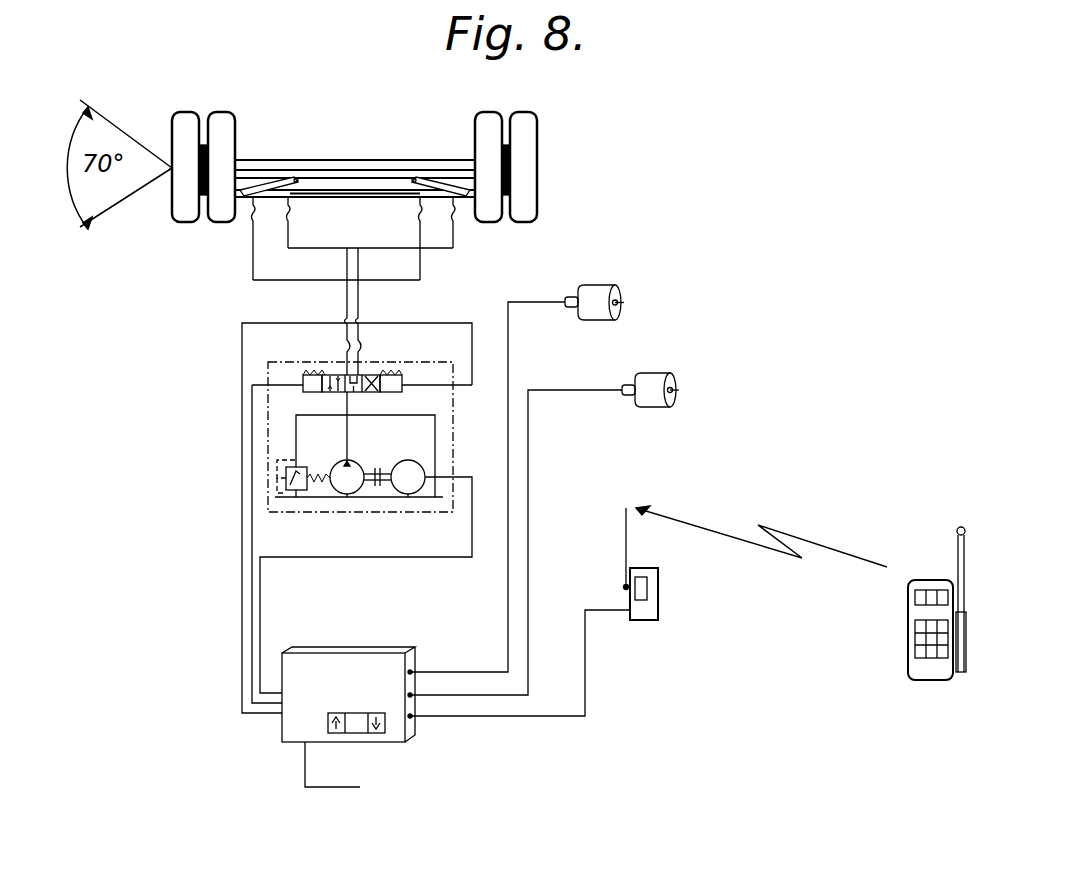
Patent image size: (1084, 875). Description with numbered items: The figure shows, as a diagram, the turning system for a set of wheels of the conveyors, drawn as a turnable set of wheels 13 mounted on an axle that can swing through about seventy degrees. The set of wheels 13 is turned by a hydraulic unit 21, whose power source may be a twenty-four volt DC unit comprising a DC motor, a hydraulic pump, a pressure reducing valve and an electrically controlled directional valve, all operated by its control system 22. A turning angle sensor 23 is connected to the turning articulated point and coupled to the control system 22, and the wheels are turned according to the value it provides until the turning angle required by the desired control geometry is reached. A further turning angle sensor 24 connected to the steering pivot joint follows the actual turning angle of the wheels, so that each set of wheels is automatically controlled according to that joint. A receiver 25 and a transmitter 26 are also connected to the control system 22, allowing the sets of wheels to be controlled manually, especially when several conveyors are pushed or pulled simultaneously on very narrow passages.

The turnable fixed set of wheels 13 is at (292, 162).
The hydraulic unit 21 is at (250, 432).
The control system 22 is at (283, 730).
The turning angle sensor 23 is at (656, 397).
The turning angle sensor 24 is at (598, 292).
The receiver 25 is at (651, 613).
The transmitter 26 is at (907, 652).